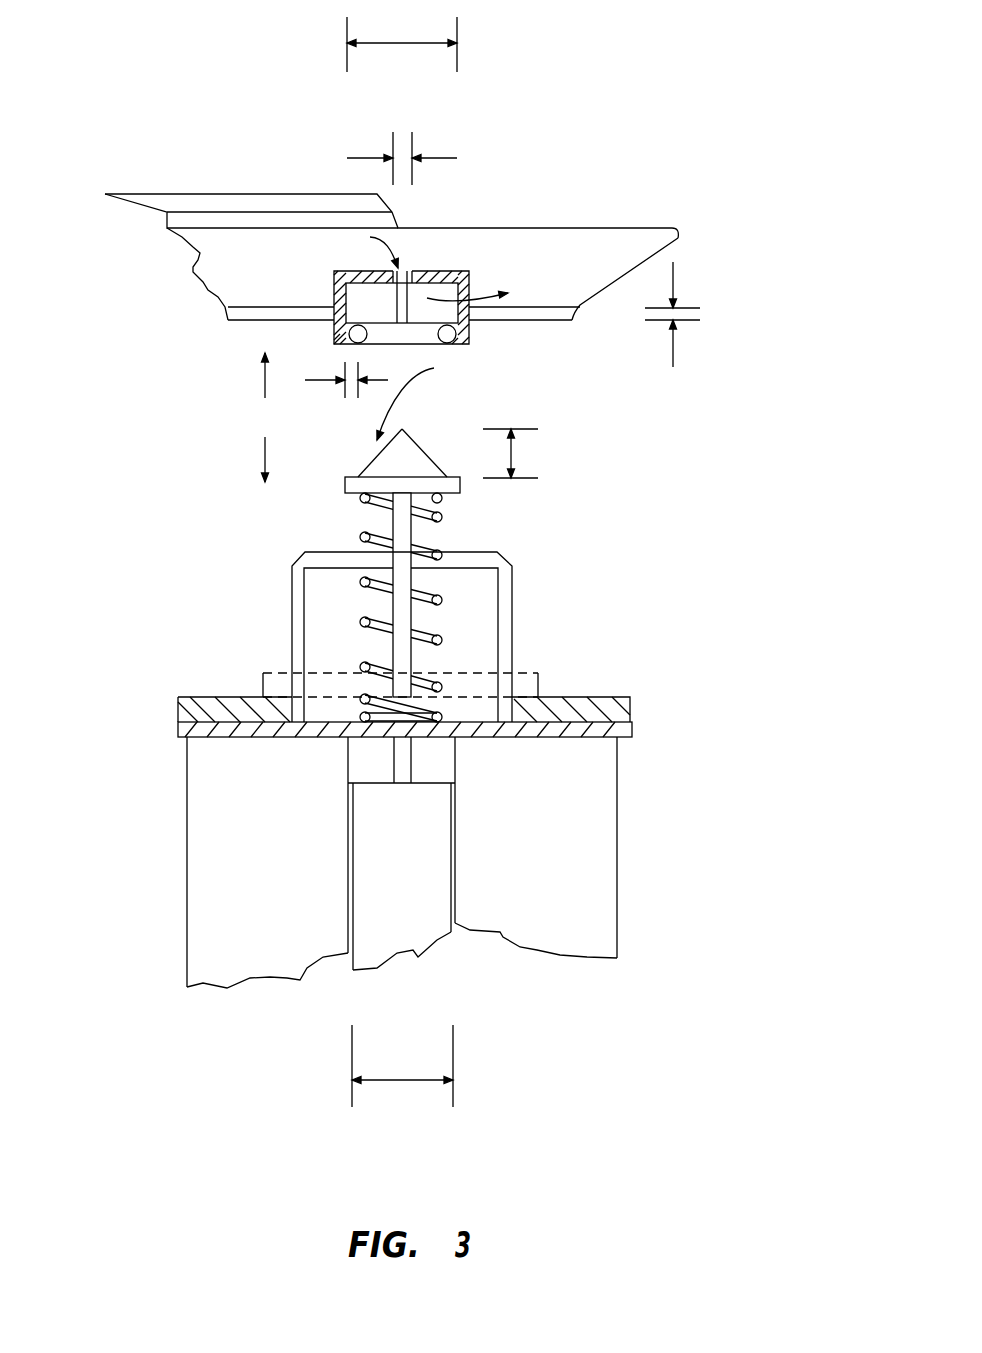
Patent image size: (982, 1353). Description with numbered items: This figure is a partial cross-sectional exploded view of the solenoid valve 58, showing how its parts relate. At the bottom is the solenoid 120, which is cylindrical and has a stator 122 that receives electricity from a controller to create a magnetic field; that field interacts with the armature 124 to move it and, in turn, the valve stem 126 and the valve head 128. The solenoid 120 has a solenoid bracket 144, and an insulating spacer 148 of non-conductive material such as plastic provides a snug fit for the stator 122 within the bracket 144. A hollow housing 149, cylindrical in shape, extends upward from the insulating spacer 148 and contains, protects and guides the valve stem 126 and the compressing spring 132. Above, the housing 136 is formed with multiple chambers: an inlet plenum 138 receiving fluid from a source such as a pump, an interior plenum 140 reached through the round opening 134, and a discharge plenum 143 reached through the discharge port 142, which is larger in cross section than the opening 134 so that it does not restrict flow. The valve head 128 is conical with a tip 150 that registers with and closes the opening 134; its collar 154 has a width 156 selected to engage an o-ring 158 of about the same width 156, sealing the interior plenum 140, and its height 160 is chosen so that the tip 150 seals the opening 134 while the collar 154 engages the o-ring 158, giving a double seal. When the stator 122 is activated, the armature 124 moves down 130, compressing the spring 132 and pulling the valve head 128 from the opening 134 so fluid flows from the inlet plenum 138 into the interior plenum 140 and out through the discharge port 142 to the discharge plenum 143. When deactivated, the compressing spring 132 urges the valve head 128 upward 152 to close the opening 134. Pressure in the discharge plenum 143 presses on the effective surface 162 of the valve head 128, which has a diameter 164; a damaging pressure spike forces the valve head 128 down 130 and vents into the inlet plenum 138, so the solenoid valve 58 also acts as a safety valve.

The solenoid valve 58 is at (708, 153).
The solenoid 120 is at (712, 832).
The stator 122 is at (593, 913).
The armature 124 is at (417, 918).
The valve stem 126 is at (430, 618).
The valve head 128 is at (425, 450).
The down 130 is at (265, 452).
The compressing spring 132 is at (447, 522).
The opening 134 is at (410, 268).
The housing 136 is at (207, 288).
The inlet plenum 138 is at (230, 257).
The interior plenum 140 is at (370, 303).
The discharge port 142 is at (470, 296).
The discharge plenum 143 is at (568, 281).
The solenoid bracket 144 is at (630, 727).
The insulating spacer 148 is at (615, 697).
The hollow housing 149 is at (512, 650).
The tip 150 is at (405, 428).
The upward 152 is at (265, 380).
The collar 154 is at (348, 497).
The width 156 is at (315, 380).
The o-ring 158 is at (420, 335).
The height 160 is at (515, 452).
The effective surface 162 is at (423, 397).
The diameter 164 is at (400, 43).